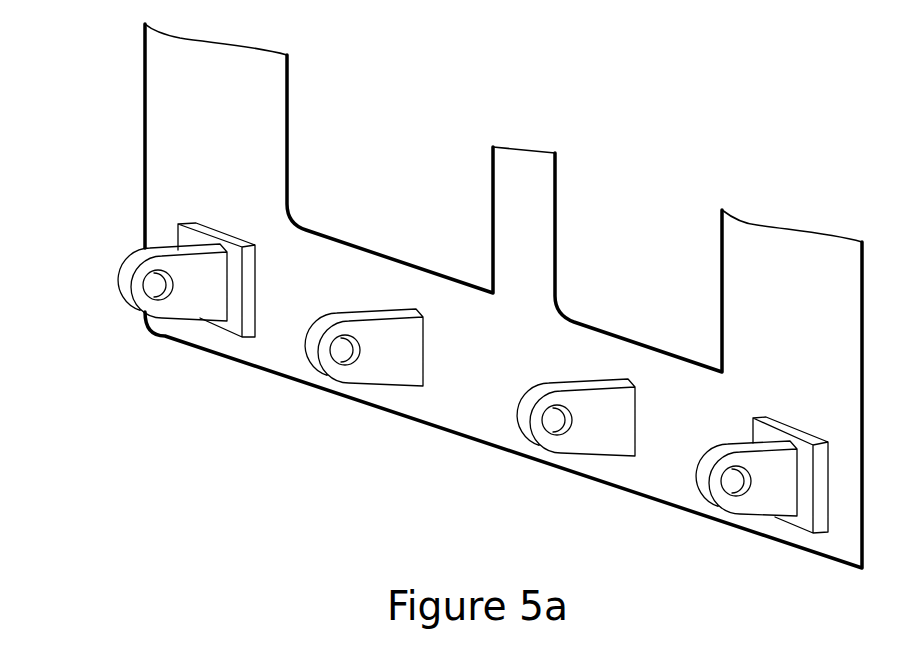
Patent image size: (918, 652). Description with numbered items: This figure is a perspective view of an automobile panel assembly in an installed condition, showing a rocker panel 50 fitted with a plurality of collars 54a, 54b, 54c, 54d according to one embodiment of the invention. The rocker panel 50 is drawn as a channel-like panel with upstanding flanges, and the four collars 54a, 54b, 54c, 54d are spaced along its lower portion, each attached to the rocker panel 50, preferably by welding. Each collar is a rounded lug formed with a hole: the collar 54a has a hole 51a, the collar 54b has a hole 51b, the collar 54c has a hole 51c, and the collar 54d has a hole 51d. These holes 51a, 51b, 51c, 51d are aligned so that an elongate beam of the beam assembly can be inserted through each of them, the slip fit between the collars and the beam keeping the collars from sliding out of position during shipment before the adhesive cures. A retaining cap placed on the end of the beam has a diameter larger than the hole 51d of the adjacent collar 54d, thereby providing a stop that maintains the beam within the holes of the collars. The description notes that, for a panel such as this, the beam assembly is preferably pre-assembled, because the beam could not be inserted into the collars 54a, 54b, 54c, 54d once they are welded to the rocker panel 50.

The rocker panel 50 is at (289, 108).
The hole 51a is at (133, 307).
The hole 51b is at (333, 357).
The hole 51c is at (533, 427).
The hole 51d is at (712, 488).
The collar 54a is at (120, 273).
The collar 54b is at (328, 312).
The collar 54c is at (582, 378).
The collar 54d is at (780, 422).